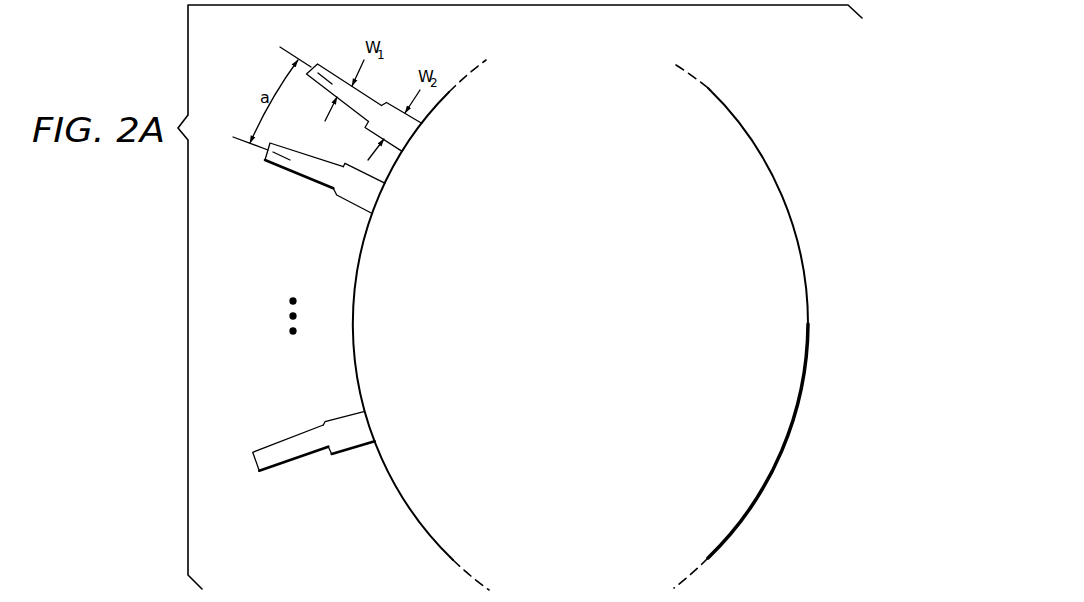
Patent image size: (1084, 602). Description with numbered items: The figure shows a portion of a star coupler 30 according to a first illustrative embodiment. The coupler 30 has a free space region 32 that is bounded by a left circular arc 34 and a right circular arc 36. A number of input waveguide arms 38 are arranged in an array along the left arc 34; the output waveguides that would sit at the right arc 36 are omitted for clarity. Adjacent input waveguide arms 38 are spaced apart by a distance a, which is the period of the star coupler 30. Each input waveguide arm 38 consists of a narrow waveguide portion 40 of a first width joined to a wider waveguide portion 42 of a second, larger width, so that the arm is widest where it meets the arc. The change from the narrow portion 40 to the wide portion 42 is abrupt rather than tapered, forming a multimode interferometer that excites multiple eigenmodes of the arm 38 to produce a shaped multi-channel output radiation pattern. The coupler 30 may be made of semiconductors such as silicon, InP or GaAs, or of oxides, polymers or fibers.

The star coupler 30 is at (746, 97).
The free space region 32 is at (587, 330).
The left circular arc 34 is at (420, 528).
The right circular arc 36 is at (766, 165).
The input waveguide arm 38 is at (318, 192).
The narrow waveguide portion 40 is at (368, 96).
The wider waveguide portion 42 is at (398, 135).